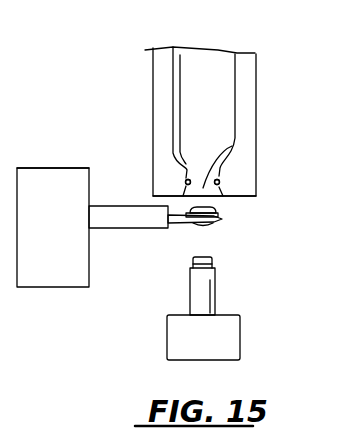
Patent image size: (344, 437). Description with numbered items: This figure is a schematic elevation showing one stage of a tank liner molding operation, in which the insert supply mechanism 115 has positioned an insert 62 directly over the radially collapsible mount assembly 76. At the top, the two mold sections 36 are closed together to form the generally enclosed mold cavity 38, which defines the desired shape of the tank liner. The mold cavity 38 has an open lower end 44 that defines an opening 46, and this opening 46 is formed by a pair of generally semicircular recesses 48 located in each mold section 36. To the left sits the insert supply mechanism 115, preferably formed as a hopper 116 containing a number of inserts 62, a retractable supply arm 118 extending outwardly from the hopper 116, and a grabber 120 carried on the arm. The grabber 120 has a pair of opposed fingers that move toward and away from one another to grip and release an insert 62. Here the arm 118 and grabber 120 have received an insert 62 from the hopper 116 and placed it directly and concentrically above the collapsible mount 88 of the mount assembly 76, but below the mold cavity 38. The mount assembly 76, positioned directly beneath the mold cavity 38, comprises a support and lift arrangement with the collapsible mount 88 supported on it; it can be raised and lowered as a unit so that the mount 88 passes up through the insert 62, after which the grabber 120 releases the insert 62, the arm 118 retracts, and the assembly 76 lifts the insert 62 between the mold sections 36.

The mold section 36 is at (247, 90).
The mold cavity 38 is at (217, 50).
The open lower end 44 is at (233, 198).
The opening 46 is at (232, 146).
The semicircular recess 48 is at (222, 181).
The insert 62 is at (195, 224).
The radially collapsible mount assembly 76 is at (244, 337).
The collapsible mount 88 is at (218, 290).
The insert supply mechanism 115 is at (64, 289).
The hopper 116 is at (78, 144).
The retractable supply arm 118 is at (134, 224).
The grabber 120 is at (224, 219).